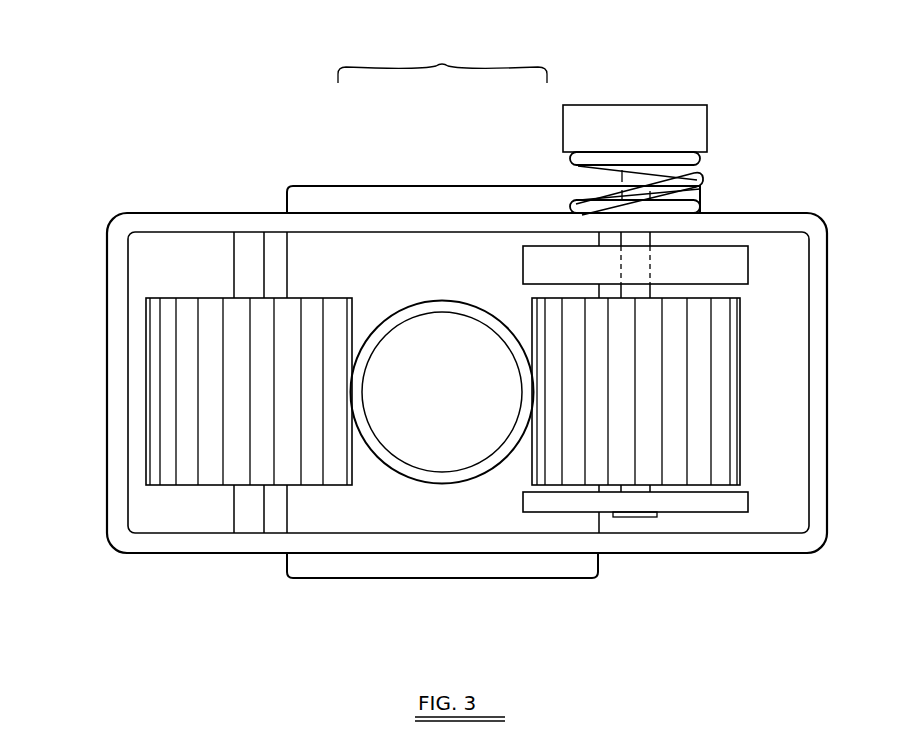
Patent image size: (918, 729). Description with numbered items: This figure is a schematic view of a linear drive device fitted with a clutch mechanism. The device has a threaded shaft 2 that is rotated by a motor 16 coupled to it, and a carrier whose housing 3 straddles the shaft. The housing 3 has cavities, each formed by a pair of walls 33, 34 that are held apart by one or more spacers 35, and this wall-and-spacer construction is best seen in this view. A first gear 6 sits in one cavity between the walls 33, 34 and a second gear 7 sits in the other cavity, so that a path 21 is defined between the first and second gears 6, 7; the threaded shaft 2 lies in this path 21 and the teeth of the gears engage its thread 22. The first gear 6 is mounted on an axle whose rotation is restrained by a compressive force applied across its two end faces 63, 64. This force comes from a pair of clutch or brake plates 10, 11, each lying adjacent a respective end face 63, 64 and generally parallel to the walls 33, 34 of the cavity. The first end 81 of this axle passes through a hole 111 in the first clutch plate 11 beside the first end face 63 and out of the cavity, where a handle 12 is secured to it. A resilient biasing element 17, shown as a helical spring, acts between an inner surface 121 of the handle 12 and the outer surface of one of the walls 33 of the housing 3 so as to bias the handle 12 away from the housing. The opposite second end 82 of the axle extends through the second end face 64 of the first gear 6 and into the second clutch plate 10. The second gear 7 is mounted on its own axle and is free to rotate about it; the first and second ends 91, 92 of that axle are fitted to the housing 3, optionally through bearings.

The threaded shaft 2 is at (442, 392).
The housing 3 is at (170, 211).
The first gear 6 is at (742, 390).
The second gear 7 is at (185, 488).
The second clutch plate 10 is at (532, 502).
The first clutch plate 11 is at (635, 265).
The handle 12 is at (635, 128).
The motor 16 is at (340, 193).
The resilient biasing element 17 is at (697, 176).
The path 21 is at (442, 59).
The thread 22 is at (403, 470).
The wall 33 is at (737, 221).
The wall 34 is at (657, 546).
The spacer 35 is at (116, 515).
The first end face 63 is at (738, 292).
The second end face 64 is at (742, 487).
The first end of axle 81 is at (655, 196).
The second end of axle 82 is at (650, 490).
The first end of axle 91 is at (241, 271).
The second end of axle 92 is at (248, 525).
The hole 111 is at (640, 268).
The inner surface of handle 121 is at (705, 160).